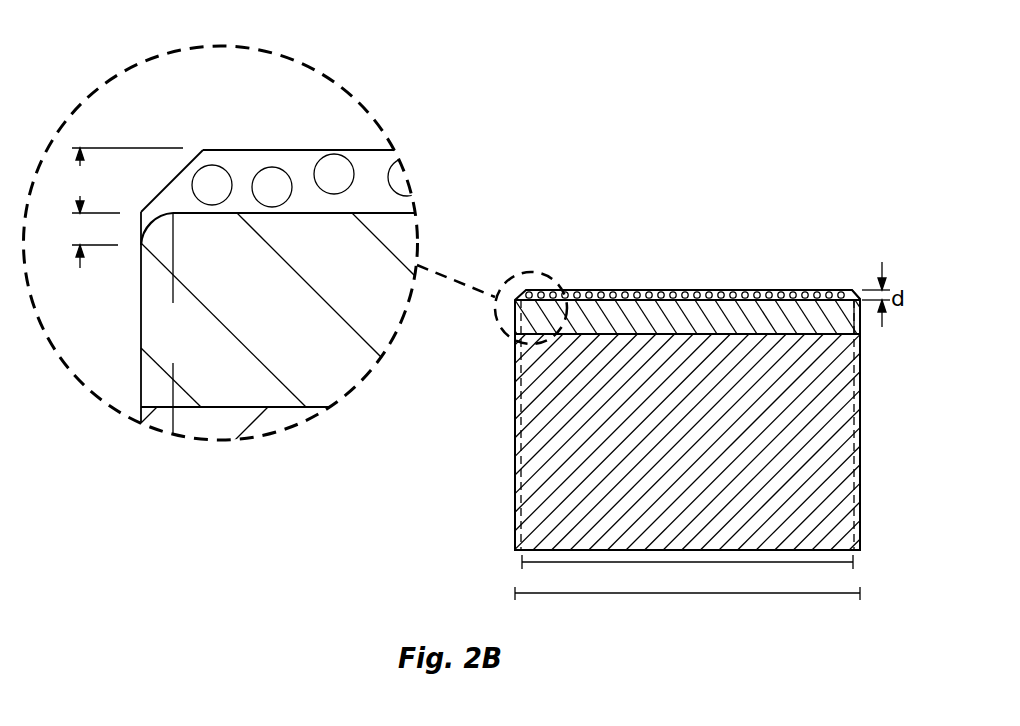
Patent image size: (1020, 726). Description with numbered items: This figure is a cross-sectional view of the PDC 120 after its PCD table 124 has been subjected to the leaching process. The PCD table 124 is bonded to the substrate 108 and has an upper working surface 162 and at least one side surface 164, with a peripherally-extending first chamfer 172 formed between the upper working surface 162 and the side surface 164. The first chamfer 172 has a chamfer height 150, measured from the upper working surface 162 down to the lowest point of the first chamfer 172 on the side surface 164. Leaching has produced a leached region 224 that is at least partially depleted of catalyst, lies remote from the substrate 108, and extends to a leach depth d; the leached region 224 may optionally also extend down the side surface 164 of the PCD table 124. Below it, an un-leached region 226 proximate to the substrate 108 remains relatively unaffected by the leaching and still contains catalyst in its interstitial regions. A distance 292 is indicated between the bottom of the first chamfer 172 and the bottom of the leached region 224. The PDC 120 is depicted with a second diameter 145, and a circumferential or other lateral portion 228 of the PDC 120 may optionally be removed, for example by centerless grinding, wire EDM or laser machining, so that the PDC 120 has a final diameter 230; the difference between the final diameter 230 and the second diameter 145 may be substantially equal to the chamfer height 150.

The substrate 108 is at (825, 435).
The PDC 120 is at (623, 268).
The PCD table 124 is at (870, 236).
The second diameter 145 is at (785, 593).
The chamfer height 150 is at (124, 180).
The upper working surface 162 is at (785, 291).
The side surface 164 is at (824, 320).
The first chamfer 172 is at (855, 292).
The leached region 224 is at (681, 292).
The un-leached region 226 is at (858, 335).
The circumferential or other lateral portion 228 is at (515, 457).
The final diameter 230 is at (712, 562).
The distance 292 is at (91, 243).